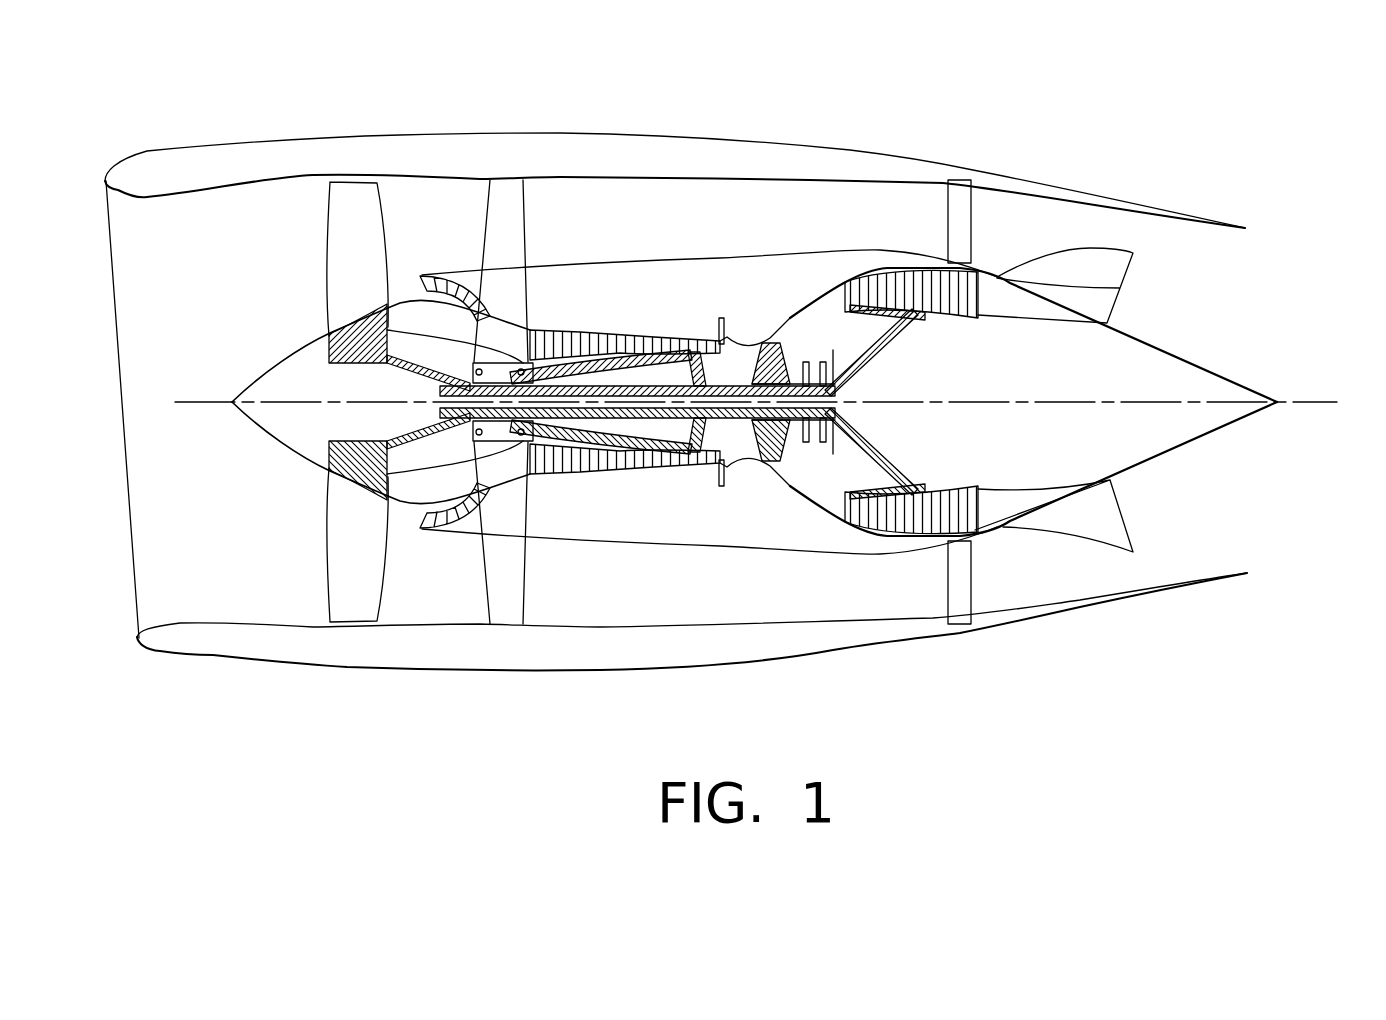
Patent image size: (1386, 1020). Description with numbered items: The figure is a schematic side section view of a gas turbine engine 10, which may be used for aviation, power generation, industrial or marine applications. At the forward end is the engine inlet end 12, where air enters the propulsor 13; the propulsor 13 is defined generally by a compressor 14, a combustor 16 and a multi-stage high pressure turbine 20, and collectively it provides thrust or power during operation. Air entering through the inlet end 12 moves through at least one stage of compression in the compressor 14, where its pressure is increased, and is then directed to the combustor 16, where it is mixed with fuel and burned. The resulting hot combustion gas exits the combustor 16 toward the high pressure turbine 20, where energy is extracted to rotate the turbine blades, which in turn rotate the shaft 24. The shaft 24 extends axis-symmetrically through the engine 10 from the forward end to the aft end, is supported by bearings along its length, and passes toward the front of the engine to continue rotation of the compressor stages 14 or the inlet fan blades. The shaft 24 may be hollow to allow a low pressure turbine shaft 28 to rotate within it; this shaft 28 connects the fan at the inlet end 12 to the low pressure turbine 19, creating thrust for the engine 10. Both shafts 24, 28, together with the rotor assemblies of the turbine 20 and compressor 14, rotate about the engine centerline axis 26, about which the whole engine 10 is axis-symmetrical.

The gas turbine engine 10 is at (714, 357).
The engine inlet end 12 is at (128, 230).
The propulsor 13 is at (587, 233).
The compressor 14 is at (572, 324).
The combustor 16 is at (742, 318).
The low pressure turbine 19 is at (937, 326).
The multi-stage high pressure turbine 20 is at (793, 307).
The shaft 24 is at (716, 447).
The engine axis 26 is at (1337, 402).
The low pressure turbine shaft 28 is at (618, 413).